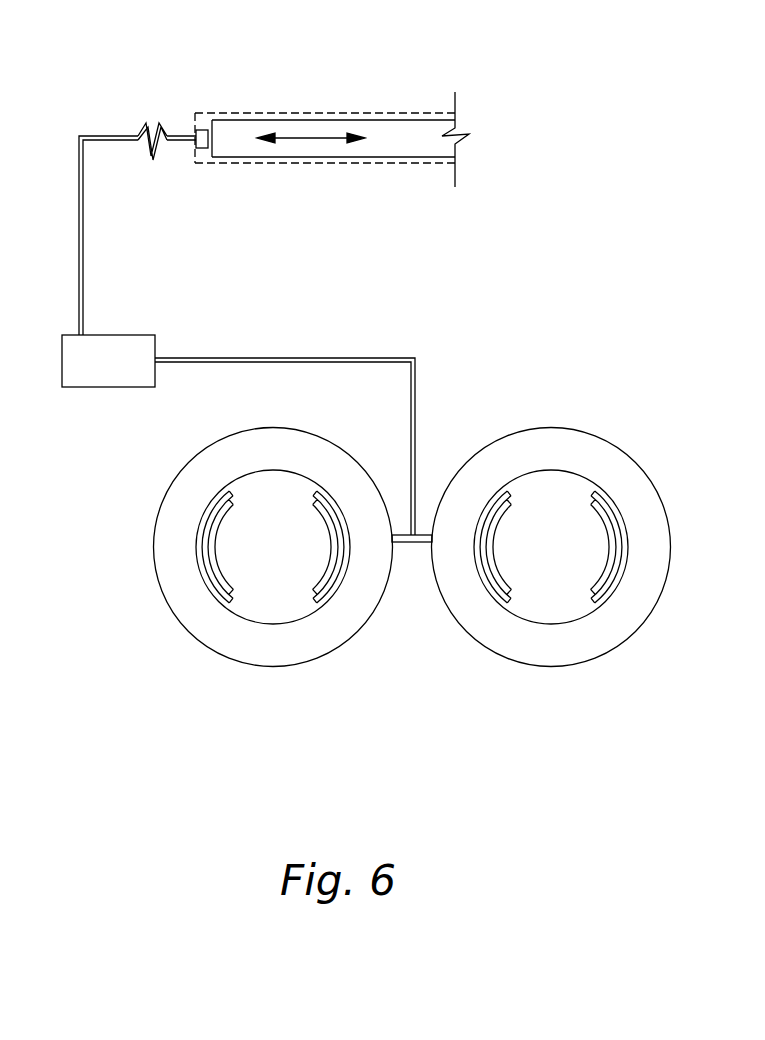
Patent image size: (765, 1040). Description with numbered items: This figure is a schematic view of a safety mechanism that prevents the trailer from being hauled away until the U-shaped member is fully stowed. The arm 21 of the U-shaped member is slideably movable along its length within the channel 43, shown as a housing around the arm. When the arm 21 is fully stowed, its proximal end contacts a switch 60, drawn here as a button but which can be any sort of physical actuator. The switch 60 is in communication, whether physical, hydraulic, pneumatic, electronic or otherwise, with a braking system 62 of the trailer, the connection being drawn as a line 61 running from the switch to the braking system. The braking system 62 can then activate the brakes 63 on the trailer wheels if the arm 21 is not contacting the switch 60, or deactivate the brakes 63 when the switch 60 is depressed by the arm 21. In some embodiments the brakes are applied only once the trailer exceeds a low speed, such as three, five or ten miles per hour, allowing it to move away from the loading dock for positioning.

The arm 21 is at (400, 130).
The channel 43 is at (342, 165).
The switch 60 is at (203, 130).
The signal wire 61 is at (110, 135).
The braking system 62 is at (100, 388).
The brakes 63 is at (257, 667).